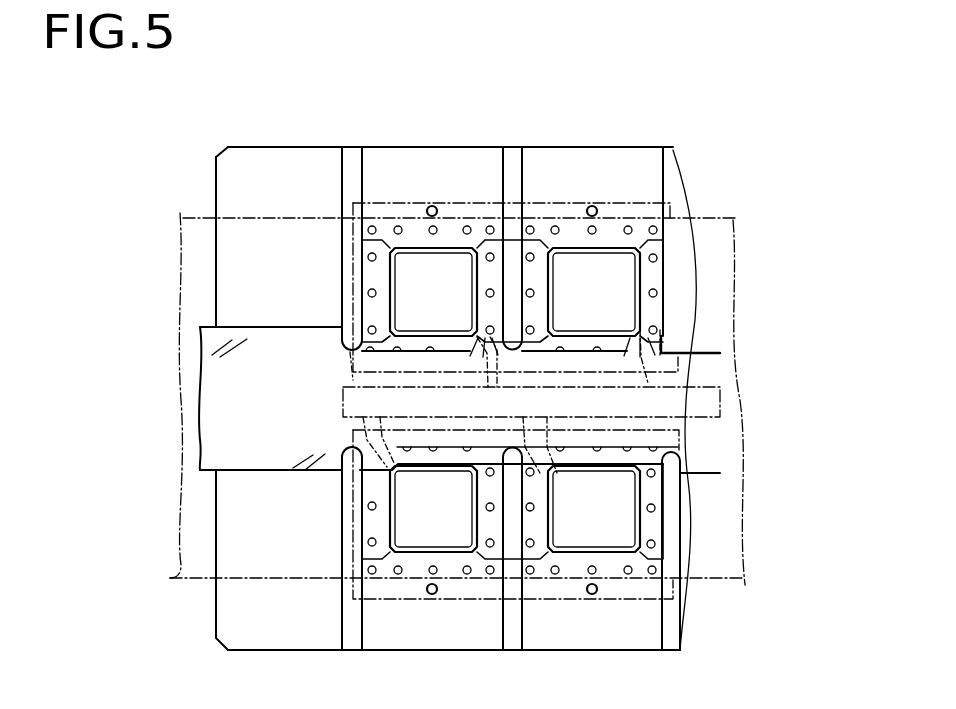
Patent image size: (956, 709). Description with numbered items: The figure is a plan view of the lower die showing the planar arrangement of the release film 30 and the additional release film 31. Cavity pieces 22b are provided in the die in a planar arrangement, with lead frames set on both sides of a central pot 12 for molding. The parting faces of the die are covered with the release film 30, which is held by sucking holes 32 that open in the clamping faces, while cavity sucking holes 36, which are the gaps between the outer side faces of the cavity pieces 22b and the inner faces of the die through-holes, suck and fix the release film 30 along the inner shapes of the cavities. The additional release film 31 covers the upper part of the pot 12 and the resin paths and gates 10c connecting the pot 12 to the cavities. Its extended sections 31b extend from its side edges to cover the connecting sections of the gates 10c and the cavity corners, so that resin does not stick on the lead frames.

The release film 30 is at (190, 254).
The additional release film 31 is at (215, 380).
The cavity piece 22b is at (615, 258).
The extended section 31b is at (553, 491).
The sucking hole 32 is at (400, 227).
The cavity sucking hole 36 is at (445, 252).
The gate 10c is at (652, 353).
The pot 12 is at (705, 400).